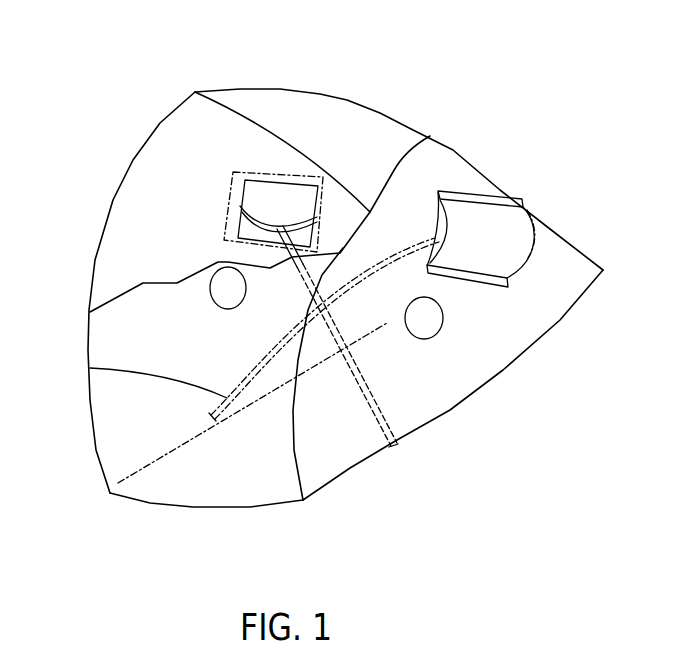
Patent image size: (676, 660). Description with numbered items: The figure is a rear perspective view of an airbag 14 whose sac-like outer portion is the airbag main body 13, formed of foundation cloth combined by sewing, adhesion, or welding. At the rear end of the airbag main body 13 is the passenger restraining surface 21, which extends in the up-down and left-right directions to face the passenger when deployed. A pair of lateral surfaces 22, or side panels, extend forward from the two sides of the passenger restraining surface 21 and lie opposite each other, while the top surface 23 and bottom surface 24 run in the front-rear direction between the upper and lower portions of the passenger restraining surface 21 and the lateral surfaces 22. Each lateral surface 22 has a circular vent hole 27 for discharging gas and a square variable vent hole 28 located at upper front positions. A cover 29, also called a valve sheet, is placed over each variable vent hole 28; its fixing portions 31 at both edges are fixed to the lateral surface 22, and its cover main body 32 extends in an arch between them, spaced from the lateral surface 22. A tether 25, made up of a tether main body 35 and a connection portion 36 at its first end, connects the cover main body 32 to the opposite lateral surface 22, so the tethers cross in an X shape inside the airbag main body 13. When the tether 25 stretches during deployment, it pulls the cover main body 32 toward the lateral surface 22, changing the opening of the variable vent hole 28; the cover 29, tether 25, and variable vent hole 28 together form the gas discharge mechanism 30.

The airbag main body 13 is at (488, 176).
The airbag 14 is at (361, 68).
The passenger restraining surface 21 is at (230, 499).
The lateral surface 22 is at (90, 298).
The top surface 23 is at (313, 93).
The bottom surface 24 is at (352, 478).
The tether 25 is at (409, 435).
The vent hole 27 is at (211, 300).
The variable vent hole 28 is at (258, 180).
The cover 29 is at (234, 240).
The gas discharge mechanism 30 is at (231, 189).
The fixing portion 31 is at (487, 197).
The cover main body 32 is at (532, 233).
The tether main body 35 is at (90, 368).
The connection portion 36 is at (240, 217).